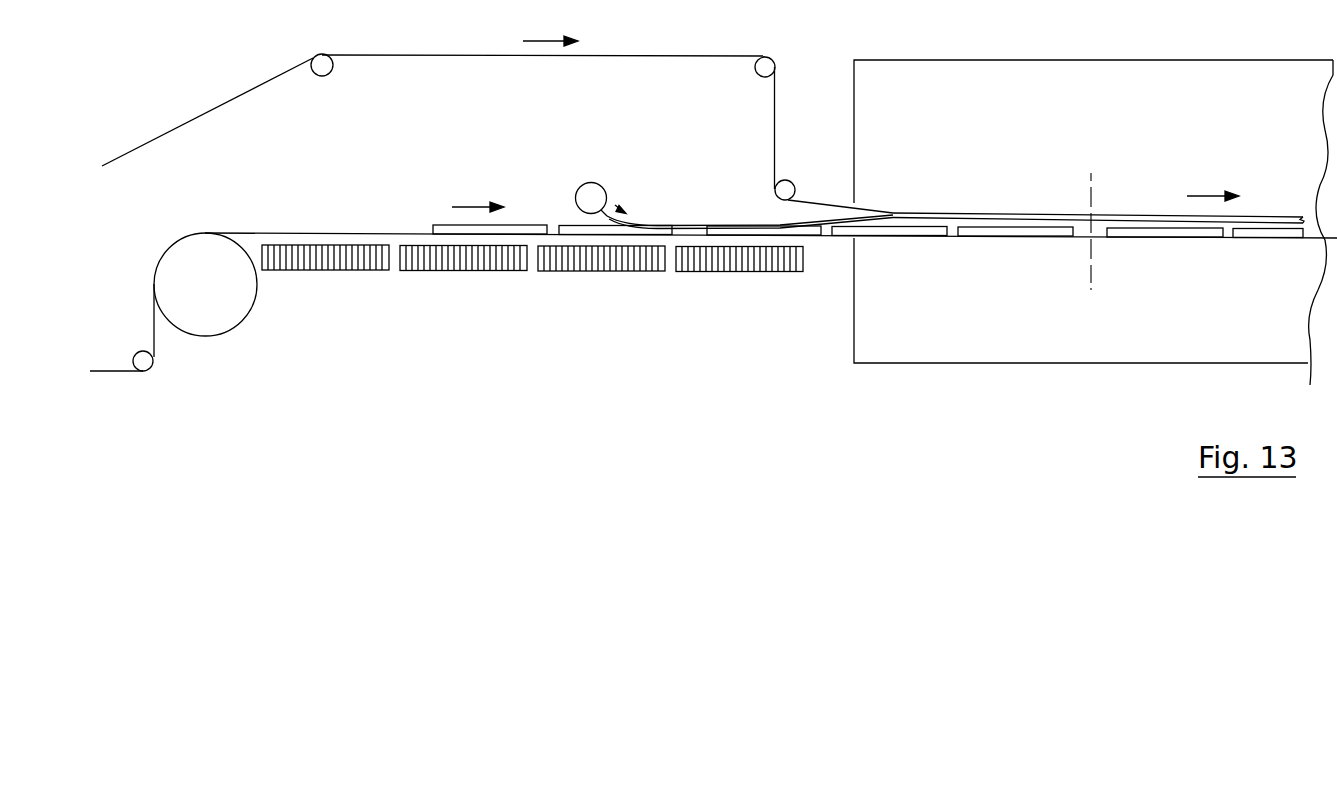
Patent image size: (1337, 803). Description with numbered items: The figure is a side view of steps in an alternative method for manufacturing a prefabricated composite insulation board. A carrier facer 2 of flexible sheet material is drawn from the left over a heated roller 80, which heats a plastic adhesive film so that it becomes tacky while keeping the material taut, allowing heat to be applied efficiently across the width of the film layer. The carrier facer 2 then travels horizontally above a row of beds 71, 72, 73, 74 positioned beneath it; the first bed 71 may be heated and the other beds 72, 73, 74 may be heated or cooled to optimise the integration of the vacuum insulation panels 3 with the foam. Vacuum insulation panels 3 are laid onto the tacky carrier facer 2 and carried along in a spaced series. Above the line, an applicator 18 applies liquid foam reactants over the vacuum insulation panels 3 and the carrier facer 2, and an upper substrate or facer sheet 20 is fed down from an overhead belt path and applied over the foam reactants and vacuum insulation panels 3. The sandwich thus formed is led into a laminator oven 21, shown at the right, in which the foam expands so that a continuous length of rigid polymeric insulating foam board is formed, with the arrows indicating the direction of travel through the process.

The carrier facer 2 is at (243, 233).
The vacuum insulation panels 3 is at (567, 226).
The applicator 18 is at (592, 187).
The upper substrate or facer sheet 20 is at (775, 92).
The laminator oven 21 is at (1125, 72).
The first bed 71 is at (330, 262).
The bed 72 is at (473, 260).
The bed 73 is at (620, 260).
The bed 74 is at (772, 260).
The heated roller 80 is at (227, 331).